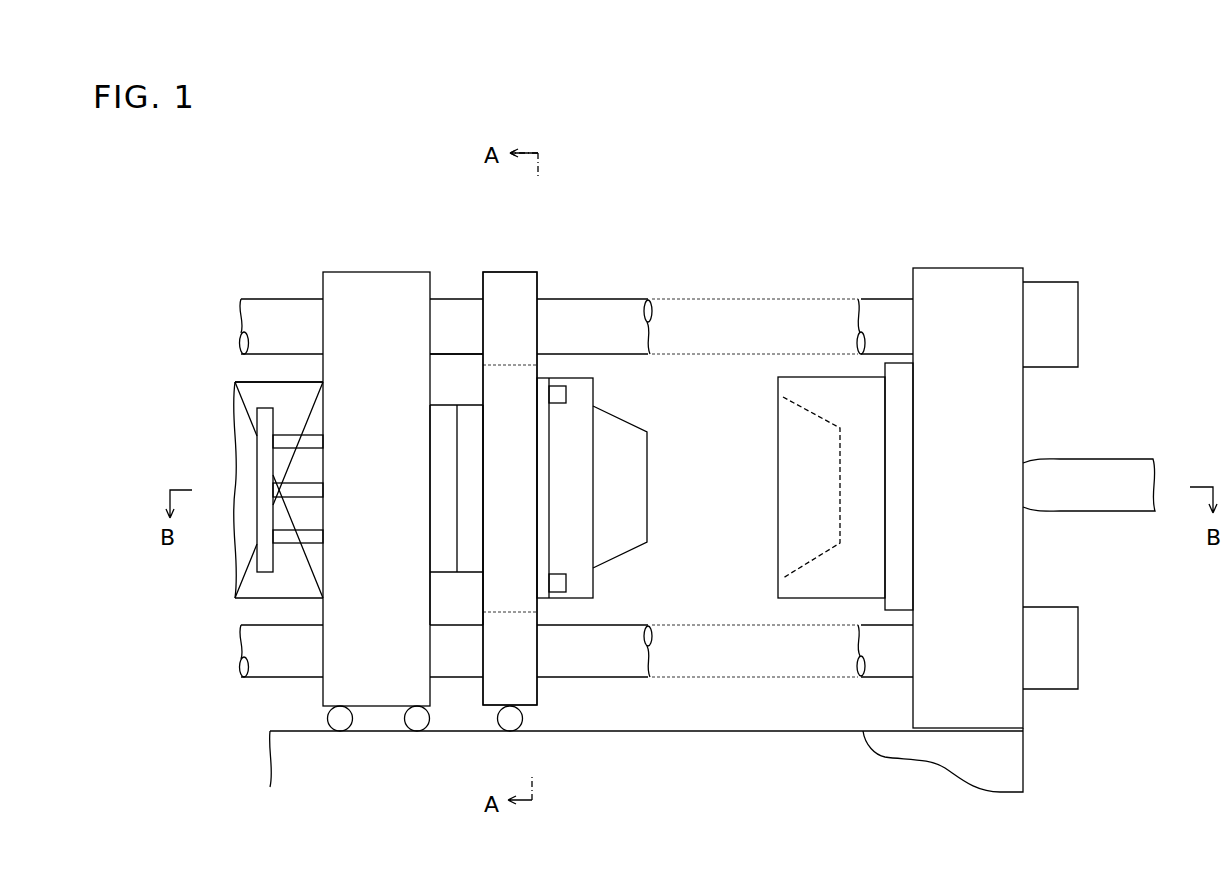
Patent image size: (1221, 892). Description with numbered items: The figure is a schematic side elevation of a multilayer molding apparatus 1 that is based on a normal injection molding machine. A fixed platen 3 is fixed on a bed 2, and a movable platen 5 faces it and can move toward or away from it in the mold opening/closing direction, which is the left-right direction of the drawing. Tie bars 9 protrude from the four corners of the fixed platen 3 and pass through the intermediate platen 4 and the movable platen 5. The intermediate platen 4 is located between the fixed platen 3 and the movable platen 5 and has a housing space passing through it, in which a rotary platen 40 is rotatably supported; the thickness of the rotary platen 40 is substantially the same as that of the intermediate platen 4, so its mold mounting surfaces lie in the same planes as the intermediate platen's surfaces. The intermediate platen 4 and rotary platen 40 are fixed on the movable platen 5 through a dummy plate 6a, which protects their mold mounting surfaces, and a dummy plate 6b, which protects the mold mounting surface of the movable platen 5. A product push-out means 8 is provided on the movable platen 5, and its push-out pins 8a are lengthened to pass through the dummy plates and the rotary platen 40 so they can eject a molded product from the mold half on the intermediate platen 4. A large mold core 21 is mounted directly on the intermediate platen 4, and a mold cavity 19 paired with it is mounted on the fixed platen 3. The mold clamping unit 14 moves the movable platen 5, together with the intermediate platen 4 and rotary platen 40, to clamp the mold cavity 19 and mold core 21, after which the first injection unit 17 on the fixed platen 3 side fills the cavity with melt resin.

The multilayer molding apparatus 1 is at (1038, 163).
The bed 2 is at (282, 755).
The fixed platen 3 is at (966, 268).
The intermediate platen 4 is at (510, 271).
The rotary platen 40 is at (511, 445).
The movable platen 5 is at (378, 272).
The dummy plate 6a is at (467, 412).
The dummy plate 6b is at (444, 412).
The product push-out means 8 is at (257, 457).
The push-out pins 8a is at (294, 427).
The tie bars 9 is at (886, 298).
The mold clamping unit 14 is at (265, 380).
The first injection unit 17 is at (1118, 458).
The mold cavity 19 is at (813, 376).
The mold core 21 is at (648, 478).